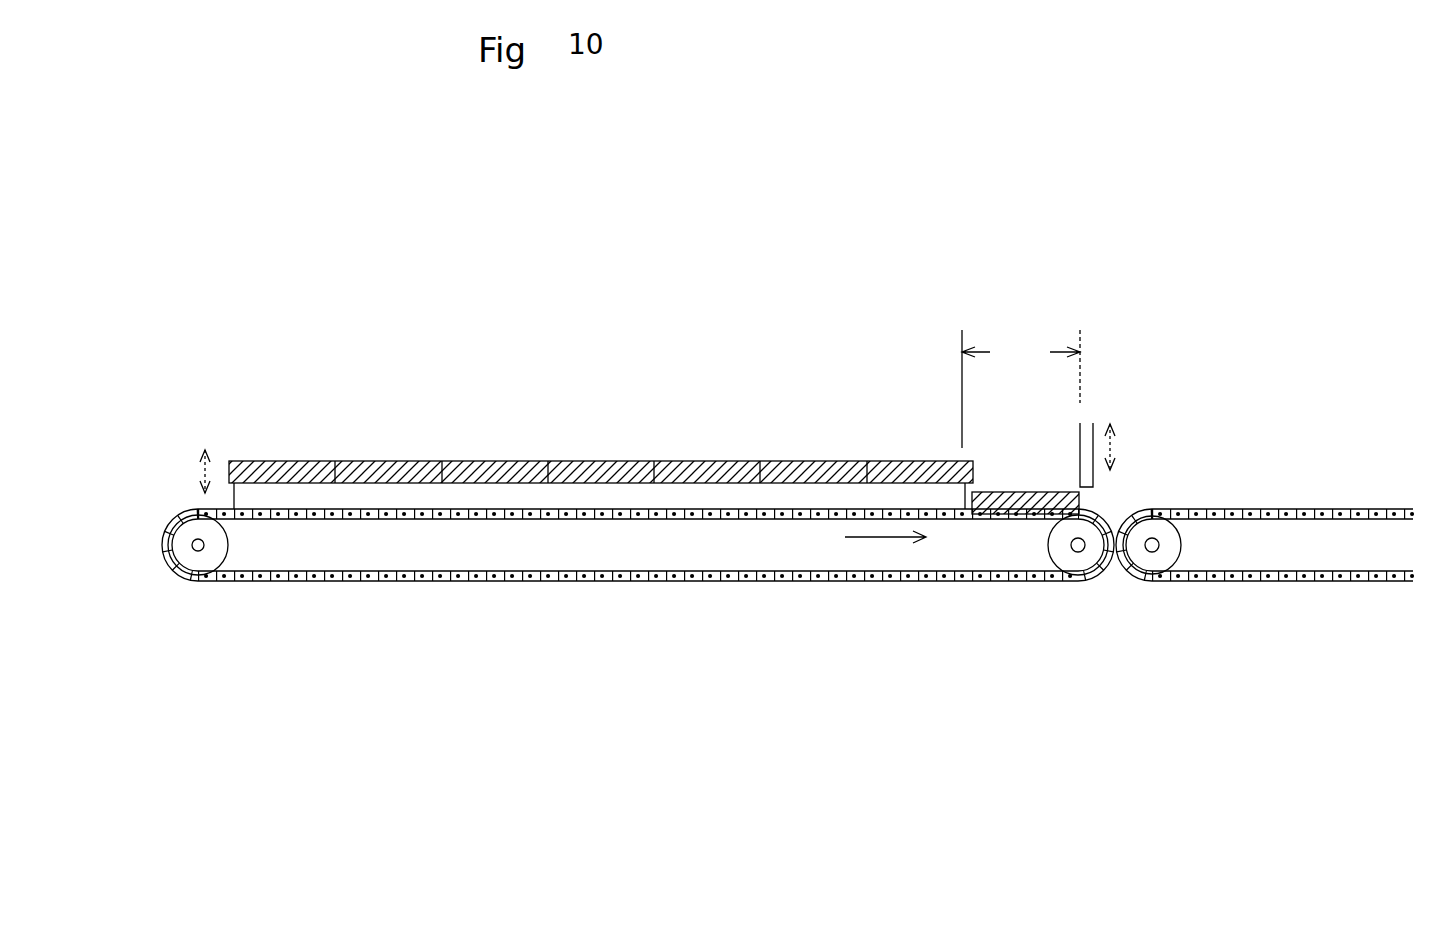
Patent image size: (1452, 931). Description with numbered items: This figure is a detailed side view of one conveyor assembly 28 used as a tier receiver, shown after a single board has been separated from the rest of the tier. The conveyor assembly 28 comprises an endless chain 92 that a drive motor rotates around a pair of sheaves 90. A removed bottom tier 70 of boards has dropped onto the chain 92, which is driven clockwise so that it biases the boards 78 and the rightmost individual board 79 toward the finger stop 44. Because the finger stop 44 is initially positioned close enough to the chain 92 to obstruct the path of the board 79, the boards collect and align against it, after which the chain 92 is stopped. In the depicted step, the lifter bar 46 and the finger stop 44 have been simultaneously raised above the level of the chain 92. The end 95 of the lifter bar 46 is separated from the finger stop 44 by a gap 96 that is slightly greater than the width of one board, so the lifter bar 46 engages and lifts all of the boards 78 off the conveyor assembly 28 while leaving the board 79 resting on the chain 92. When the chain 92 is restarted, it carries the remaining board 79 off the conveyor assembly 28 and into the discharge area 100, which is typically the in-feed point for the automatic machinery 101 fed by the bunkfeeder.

The conveyor assembly 28 is at (527, 556).
The finger stop 44 is at (1093, 423).
The lifter bar 46 is at (320, 495).
The tier 70 is at (547, 460).
The boards 78 is at (409, 460).
The individual board 79 is at (1022, 492).
The sheaves 90 is at (172, 522).
The chain 92 is at (948, 516).
The end of lifter bar 95 is at (965, 508).
The gap 96 is at (1021, 389).
The discharge area 100 is at (1252, 479).
The automatic machinery 101 is at (1341, 507).